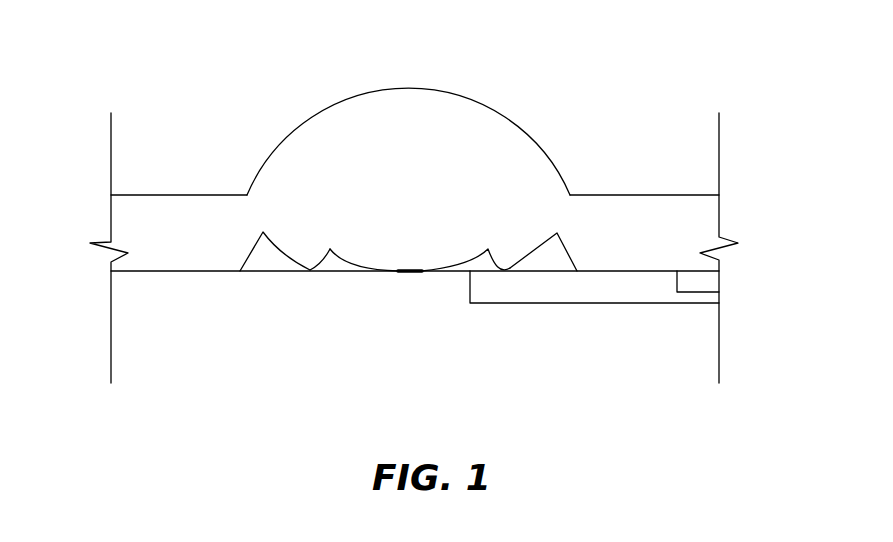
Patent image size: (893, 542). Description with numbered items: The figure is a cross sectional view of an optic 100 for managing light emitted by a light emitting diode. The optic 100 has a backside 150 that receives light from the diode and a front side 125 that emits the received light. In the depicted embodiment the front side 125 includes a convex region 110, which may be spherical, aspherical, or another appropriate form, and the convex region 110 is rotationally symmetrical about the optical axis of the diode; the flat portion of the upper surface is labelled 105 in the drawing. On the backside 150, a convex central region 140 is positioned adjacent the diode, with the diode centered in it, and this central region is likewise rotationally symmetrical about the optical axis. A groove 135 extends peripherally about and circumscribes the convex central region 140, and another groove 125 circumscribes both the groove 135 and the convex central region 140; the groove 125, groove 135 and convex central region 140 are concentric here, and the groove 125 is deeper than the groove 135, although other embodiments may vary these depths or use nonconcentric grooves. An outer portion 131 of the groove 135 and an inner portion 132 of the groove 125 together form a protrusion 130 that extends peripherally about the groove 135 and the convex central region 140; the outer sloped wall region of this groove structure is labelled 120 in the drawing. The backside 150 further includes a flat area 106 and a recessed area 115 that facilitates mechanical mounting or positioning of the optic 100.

The optic 100 is at (693, 55).
The cover plate 105 is at (190, 195).
The flat area 106 is at (173, 272).
The convex region 110 is at (313, 113).
The recessed area 115 is at (653, 295).
The first ridge 120 is at (240, 272).
The groove 125 is at (605, 188).
The protrusion 130 is at (310, 272).
The outer portion of the groove 131 is at (491, 255).
The inner portion of the groove 132 is at (532, 260).
The groove 135 is at (345, 263).
The convex central region 140 is at (400, 274).
The backside 150 is at (196, 281).